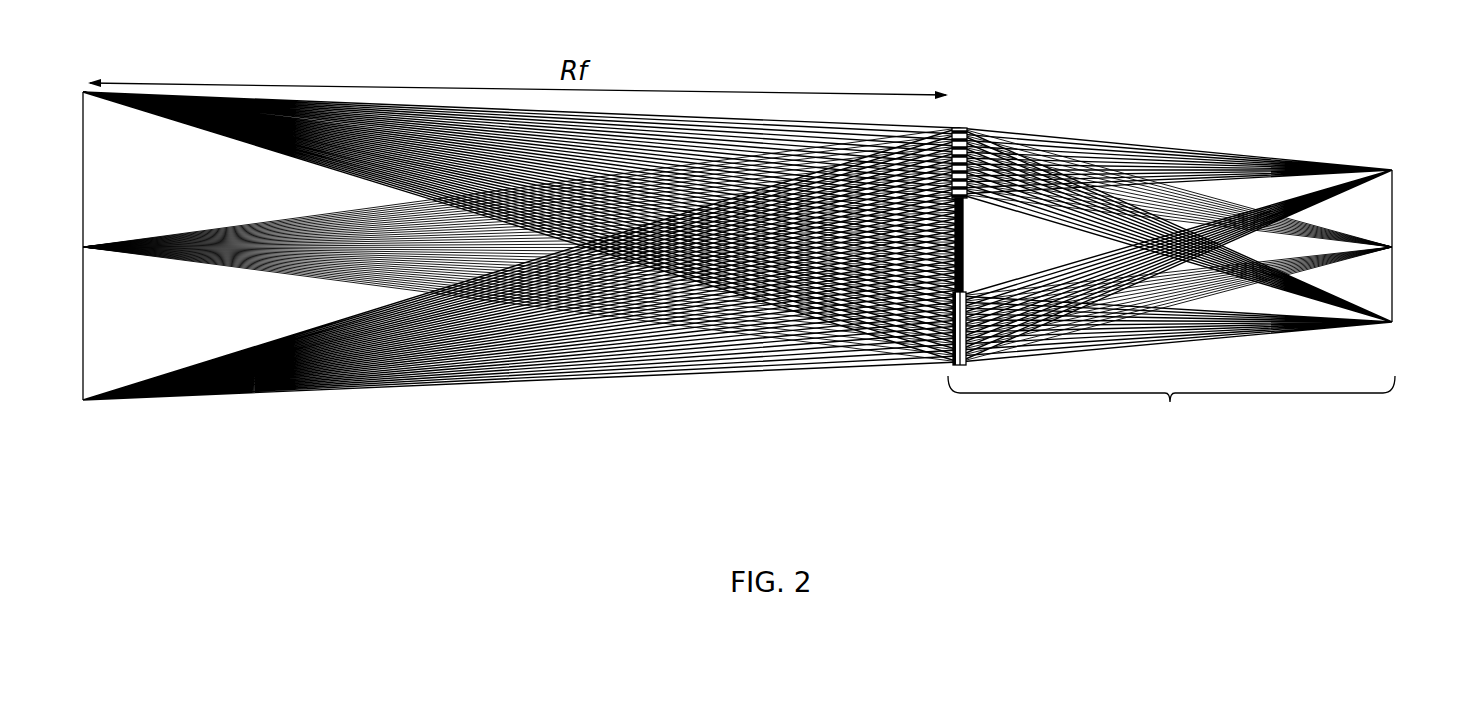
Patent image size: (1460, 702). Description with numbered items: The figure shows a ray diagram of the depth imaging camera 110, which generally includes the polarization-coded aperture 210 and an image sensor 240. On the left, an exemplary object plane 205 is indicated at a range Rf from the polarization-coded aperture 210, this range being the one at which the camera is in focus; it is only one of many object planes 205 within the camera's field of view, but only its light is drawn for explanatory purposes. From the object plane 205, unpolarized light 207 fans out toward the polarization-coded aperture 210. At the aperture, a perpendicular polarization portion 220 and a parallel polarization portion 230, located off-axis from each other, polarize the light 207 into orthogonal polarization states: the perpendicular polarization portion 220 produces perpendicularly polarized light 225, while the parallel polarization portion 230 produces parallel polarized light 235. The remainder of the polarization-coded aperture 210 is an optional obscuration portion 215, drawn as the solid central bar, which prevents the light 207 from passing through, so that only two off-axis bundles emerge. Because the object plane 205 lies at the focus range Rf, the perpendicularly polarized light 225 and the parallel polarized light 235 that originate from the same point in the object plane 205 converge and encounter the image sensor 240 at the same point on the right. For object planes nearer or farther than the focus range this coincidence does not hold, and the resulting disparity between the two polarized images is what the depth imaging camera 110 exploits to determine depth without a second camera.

The depth imaging camera 110 is at (1171, 419).
The object plane 205 is at (88, 414).
The light 207 is at (651, 373).
The polarization-coded aperture 210 is at (1004, 234).
The obscuration portion 215 is at (963, 235).
The perpendicular polarization portion 220 is at (962, 127).
The perpendicularly polarized light 225 is at (1187, 138).
The parallel polarization portion 230 is at (952, 334).
The parallel polarized light 235 is at (1247, 350).
The image sensor 240 is at (1393, 207).